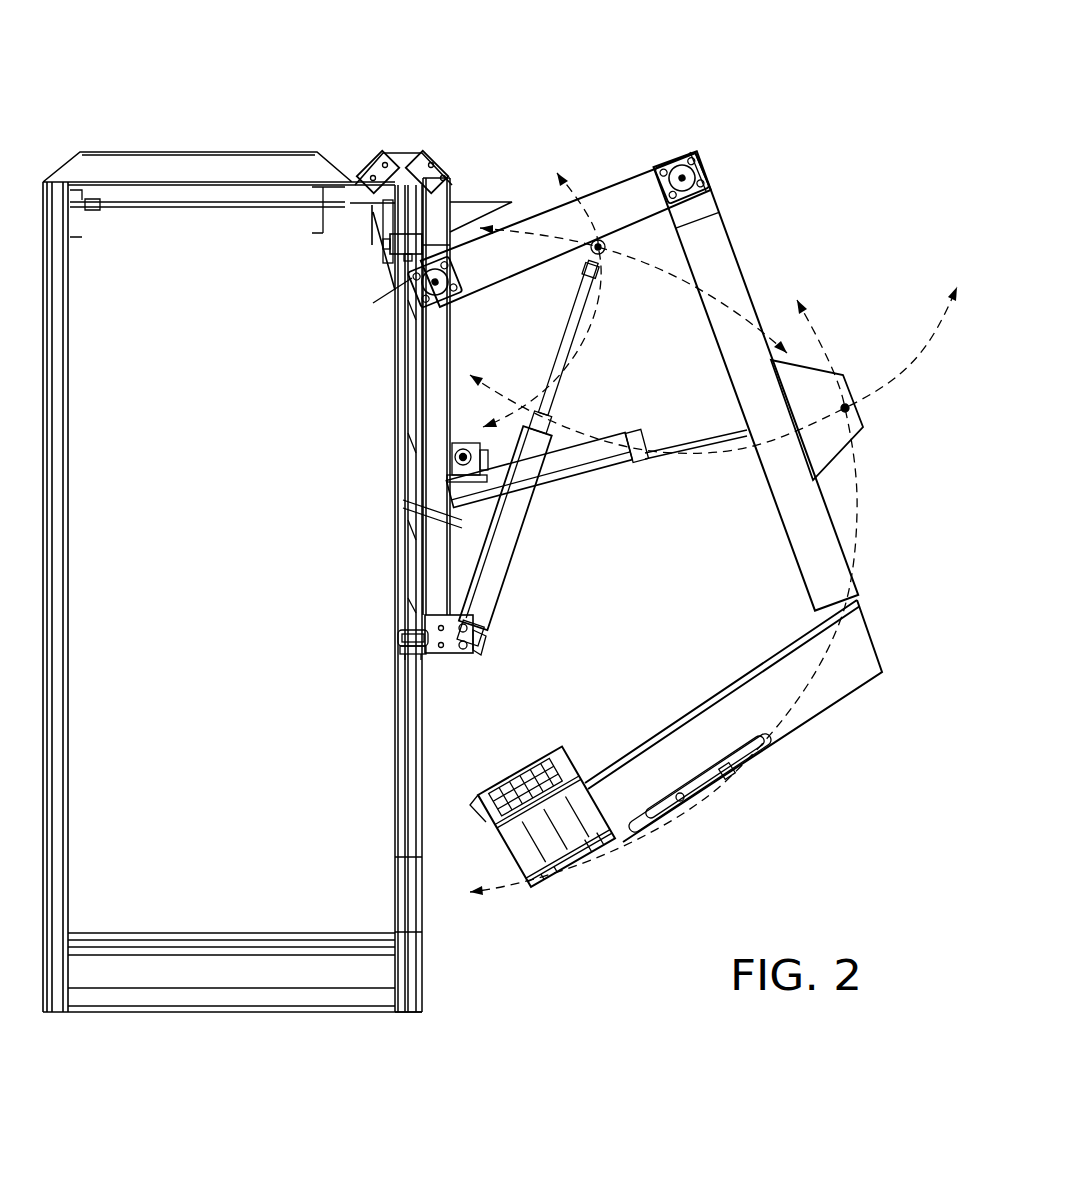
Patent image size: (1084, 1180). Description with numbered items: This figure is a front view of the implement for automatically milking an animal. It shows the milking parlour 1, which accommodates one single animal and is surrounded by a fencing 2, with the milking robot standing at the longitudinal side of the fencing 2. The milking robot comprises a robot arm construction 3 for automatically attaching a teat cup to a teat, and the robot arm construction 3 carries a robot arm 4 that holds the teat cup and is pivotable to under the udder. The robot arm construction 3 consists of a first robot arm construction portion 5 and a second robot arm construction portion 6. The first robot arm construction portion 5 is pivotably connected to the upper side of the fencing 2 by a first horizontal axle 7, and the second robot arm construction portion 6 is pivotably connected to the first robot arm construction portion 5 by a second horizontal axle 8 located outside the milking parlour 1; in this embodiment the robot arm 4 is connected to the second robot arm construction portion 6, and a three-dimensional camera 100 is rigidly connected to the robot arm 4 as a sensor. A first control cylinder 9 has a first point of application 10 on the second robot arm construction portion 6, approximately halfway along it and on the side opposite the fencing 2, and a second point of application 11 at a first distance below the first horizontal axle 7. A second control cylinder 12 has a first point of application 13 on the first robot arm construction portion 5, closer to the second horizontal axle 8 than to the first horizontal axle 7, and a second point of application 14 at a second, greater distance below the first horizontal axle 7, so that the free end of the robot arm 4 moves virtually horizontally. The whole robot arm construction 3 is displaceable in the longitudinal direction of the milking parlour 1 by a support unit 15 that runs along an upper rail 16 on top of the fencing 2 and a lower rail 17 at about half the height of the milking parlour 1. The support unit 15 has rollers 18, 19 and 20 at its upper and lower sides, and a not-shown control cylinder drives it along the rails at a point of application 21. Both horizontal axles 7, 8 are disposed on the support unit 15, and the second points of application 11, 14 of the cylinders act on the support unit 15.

The milking parlour 1 is at (152, 612).
The fencing 2 is at (395, 790).
The robot arm construction 3 is at (765, 239).
The robot arm 4 is at (808, 713).
The first robot arm construction portion 5 is at (558, 222).
The second robot arm construction portion 6 is at (818, 557).
The first horizontal axle 7 is at (430, 290).
The second horizontal axle 8 is at (698, 160).
The first control cylinder 9 is at (613, 463).
The first point of application 10 is at (845, 408).
The second point of application 11 is at (437, 495).
The second control cylinder 12 is at (486, 569).
The first point of application 13 is at (600, 252).
The second point of application 14 is at (458, 637).
The support unit 15 is at (400, 122).
The rail 16 is at (392, 222).
The rail 17 is at (400, 633).
The roller 18 is at (360, 168).
The roller 19 is at (447, 168).
The roller 20 is at (405, 645).
The point of application 21 is at (455, 446).
The 3D camera 100 is at (535, 750).